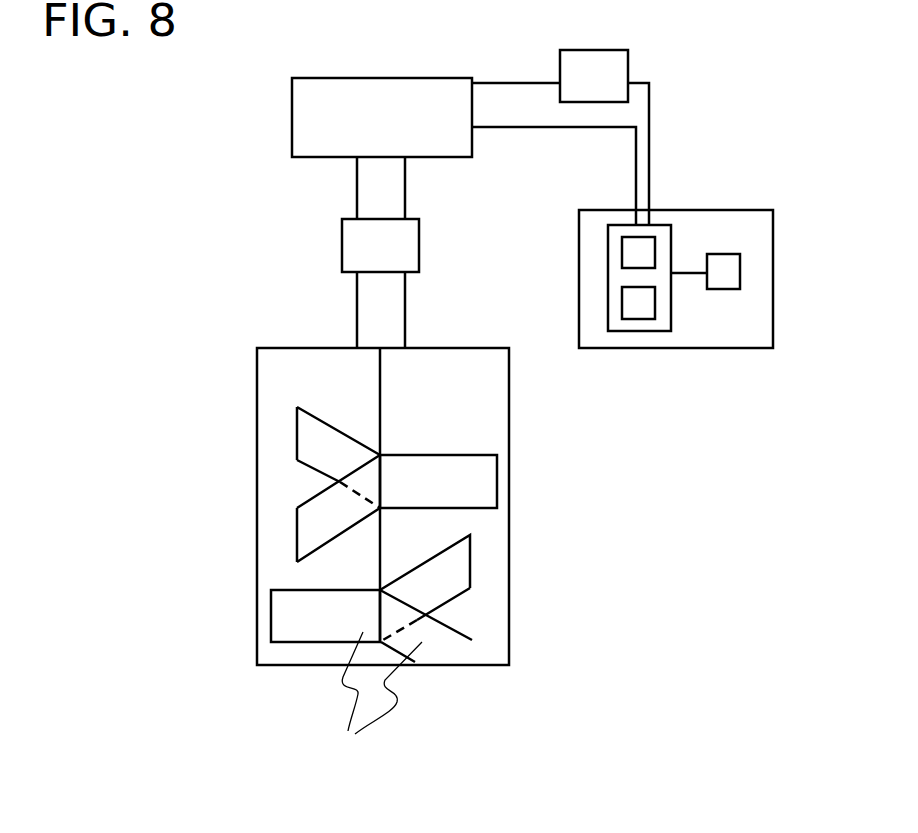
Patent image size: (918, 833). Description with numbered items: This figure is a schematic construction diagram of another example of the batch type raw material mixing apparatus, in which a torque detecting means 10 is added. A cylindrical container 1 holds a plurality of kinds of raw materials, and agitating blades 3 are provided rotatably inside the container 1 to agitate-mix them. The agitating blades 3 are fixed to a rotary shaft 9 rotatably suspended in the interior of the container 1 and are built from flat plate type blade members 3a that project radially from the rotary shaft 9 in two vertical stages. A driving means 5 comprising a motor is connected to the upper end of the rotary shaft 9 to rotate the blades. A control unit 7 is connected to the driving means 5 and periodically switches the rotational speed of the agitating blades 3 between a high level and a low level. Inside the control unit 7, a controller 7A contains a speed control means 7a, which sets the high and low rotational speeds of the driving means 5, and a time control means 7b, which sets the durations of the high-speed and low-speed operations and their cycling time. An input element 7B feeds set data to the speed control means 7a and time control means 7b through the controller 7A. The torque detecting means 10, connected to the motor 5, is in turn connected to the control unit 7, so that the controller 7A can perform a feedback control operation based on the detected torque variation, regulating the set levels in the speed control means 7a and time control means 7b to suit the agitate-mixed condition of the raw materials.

The cylindrical container 1 is at (510, 548).
The agitating blades 3 is at (298, 439).
The blade members 3a is at (378, 703).
The driving means 5 is at (292, 118).
The control unit 7 is at (740, 212).
The controller 7A is at (656, 220).
The speed control means 7a is at (628, 252).
The time control means 7b is at (638, 308).
The input element 7B is at (728, 285).
The rotary shaft 9 is at (380, 395).
The torque detecting means 10 is at (612, 93).